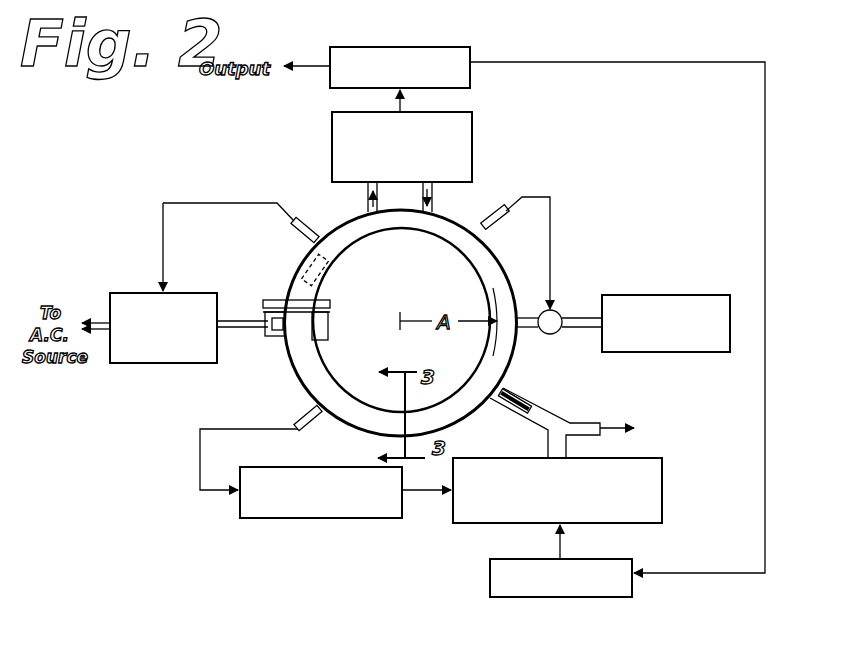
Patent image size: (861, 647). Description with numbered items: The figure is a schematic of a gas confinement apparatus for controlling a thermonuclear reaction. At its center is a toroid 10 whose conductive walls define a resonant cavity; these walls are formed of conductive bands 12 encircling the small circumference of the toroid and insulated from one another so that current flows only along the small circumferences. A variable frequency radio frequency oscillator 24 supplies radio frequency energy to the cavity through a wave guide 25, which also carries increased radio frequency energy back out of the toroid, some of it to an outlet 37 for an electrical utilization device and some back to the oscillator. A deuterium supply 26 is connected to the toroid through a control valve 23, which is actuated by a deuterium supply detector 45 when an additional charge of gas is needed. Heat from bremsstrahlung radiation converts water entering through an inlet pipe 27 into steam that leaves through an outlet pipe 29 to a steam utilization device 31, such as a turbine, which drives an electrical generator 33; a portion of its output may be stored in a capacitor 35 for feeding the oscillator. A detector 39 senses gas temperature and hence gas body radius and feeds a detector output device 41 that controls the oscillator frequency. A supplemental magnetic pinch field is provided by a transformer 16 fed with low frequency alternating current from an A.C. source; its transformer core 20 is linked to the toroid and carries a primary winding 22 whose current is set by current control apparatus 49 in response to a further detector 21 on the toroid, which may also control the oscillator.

The toroid 10 is at (465, 255).
The conductive bands 12 is at (328, 268).
The transformer 16 is at (279, 316).
The transformer core 20 is at (264, 301).
The detector 21 is at (292, 236).
The primary winding 22 is at (270, 335).
The control valve 23 is at (555, 312).
The radio frequency oscillator 24 is at (662, 490).
The wave guide 25 is at (512, 398).
The deuterium supply 26 is at (688, 296).
The inlet pipe 27 is at (433, 203).
The outlet pipe 29 is at (366, 202).
The steam utilization device 31 is at (472, 151).
The electrical generator 33 is at (470, 50).
The capacitor 35 is at (590, 598).
The outlet 37 is at (580, 421).
The detector 39 is at (302, 412).
The detector output device 41 is at (305, 519).
The deuterium supply detector 45 is at (495, 221).
The current control apparatus 49 is at (110, 300).